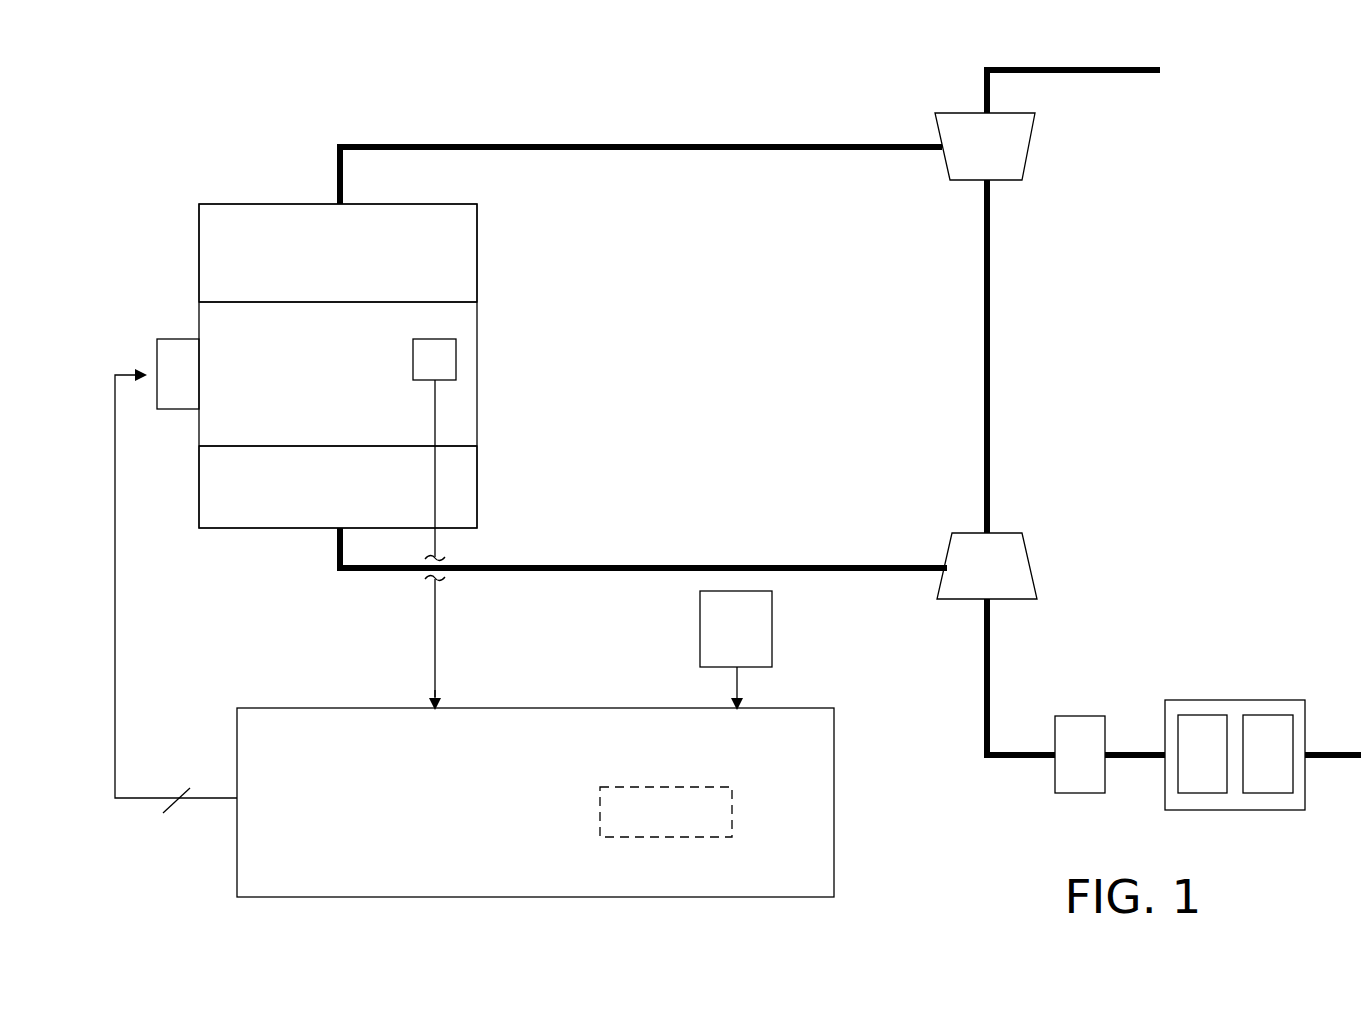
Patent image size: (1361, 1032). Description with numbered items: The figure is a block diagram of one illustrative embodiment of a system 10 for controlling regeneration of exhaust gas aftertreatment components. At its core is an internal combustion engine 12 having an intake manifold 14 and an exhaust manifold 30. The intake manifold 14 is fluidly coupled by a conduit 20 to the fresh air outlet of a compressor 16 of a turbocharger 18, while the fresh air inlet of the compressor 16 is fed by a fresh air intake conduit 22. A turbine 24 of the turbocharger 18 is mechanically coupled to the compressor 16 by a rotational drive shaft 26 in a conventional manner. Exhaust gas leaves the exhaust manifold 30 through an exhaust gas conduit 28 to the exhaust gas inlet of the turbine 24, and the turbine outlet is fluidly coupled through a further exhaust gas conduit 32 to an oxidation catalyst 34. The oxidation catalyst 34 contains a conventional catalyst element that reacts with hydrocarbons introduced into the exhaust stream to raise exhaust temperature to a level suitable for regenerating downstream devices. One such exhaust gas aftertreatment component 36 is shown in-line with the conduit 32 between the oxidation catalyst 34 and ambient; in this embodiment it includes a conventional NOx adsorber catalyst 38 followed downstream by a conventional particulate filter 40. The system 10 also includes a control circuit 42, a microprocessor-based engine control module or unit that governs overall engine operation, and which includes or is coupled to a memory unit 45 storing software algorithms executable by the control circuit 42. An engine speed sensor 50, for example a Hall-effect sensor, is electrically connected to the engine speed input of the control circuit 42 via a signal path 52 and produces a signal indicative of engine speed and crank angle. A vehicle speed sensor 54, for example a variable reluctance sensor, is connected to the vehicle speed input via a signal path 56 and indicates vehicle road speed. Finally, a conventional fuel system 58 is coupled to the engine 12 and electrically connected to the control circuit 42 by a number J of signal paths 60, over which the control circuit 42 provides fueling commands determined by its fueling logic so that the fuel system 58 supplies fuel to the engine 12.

The system 10 is at (147, 143).
The internal combustion engine 12 is at (198, 313).
The intake manifold 14 is at (247, 203).
The compressor 16 is at (1028, 155).
The turbocharger 18 is at (1018, 300).
The conduit 20 is at (400, 144).
The fresh air intake conduit 22 is at (984, 90).
The turbine 24 is at (948, 548).
The rotational drive shaft 26 is at (984, 371).
The exhaust gas conduit 28 is at (635, 565).
The exhaust manifold 30 is at (246, 529).
The exhaust gas conduit 32 is at (984, 678).
The oxidation catalyst 34 is at (1072, 715).
The exhaust gas aftertreatment component 36 is at (1288, 699).
The NOx adsorber catalyst 38 is at (1198, 794).
The particulate filter 40 is at (1272, 794).
The control circuit 42 is at (835, 754).
The memory unit 45 is at (733, 798).
The engine speed sensor 50 is at (412, 346).
The signal path 52 is at (433, 627).
The vehicle speed sensor 54 is at (699, 617).
The signal path 56 is at (740, 676).
The fuel system 58 is at (177, 410).
The signal paths 60 is at (116, 606).